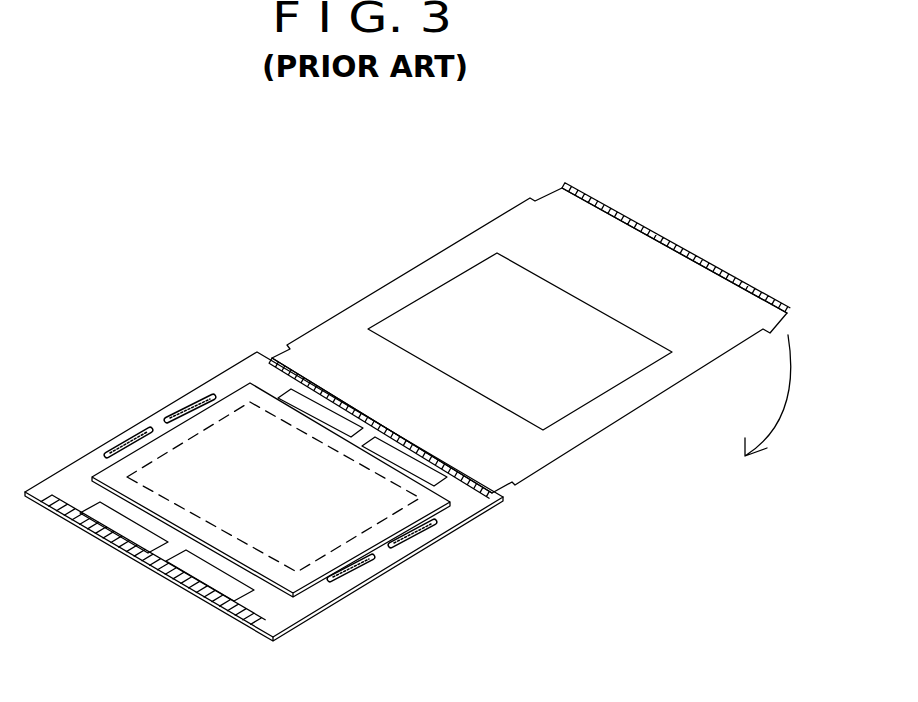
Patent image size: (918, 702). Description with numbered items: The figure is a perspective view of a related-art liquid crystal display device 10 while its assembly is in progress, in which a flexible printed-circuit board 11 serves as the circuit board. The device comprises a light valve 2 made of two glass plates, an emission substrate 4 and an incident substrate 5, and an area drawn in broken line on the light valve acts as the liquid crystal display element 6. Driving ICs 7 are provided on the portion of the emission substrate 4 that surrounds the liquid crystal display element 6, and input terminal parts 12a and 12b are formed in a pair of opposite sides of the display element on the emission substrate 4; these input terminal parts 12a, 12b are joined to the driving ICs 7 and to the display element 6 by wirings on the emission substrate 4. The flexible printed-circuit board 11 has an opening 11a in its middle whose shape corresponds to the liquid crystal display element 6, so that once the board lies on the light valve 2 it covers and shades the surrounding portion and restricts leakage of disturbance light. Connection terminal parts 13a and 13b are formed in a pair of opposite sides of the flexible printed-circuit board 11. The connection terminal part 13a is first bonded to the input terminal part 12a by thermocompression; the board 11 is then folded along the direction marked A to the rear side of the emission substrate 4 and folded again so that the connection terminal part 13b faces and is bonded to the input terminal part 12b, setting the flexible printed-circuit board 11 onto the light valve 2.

The liquid crystal display device 10 is at (228, 161).
The light valve 2 is at (449, 560).
The emission substrate 4 is at (287, 618).
The incident substrate 5 is at (302, 582).
The liquid crystal display element 6 is at (240, 455).
The driving ICs 7 is at (186, 406).
The flexible printed-circuit board 11 is at (592, 458).
The opening 11a is at (445, 317).
The input terminal part 12a is at (439, 470).
The input terminal part 12b is at (143, 558).
The connection terminal part 13a is at (492, 496).
The connection terminal part 13b is at (658, 238).